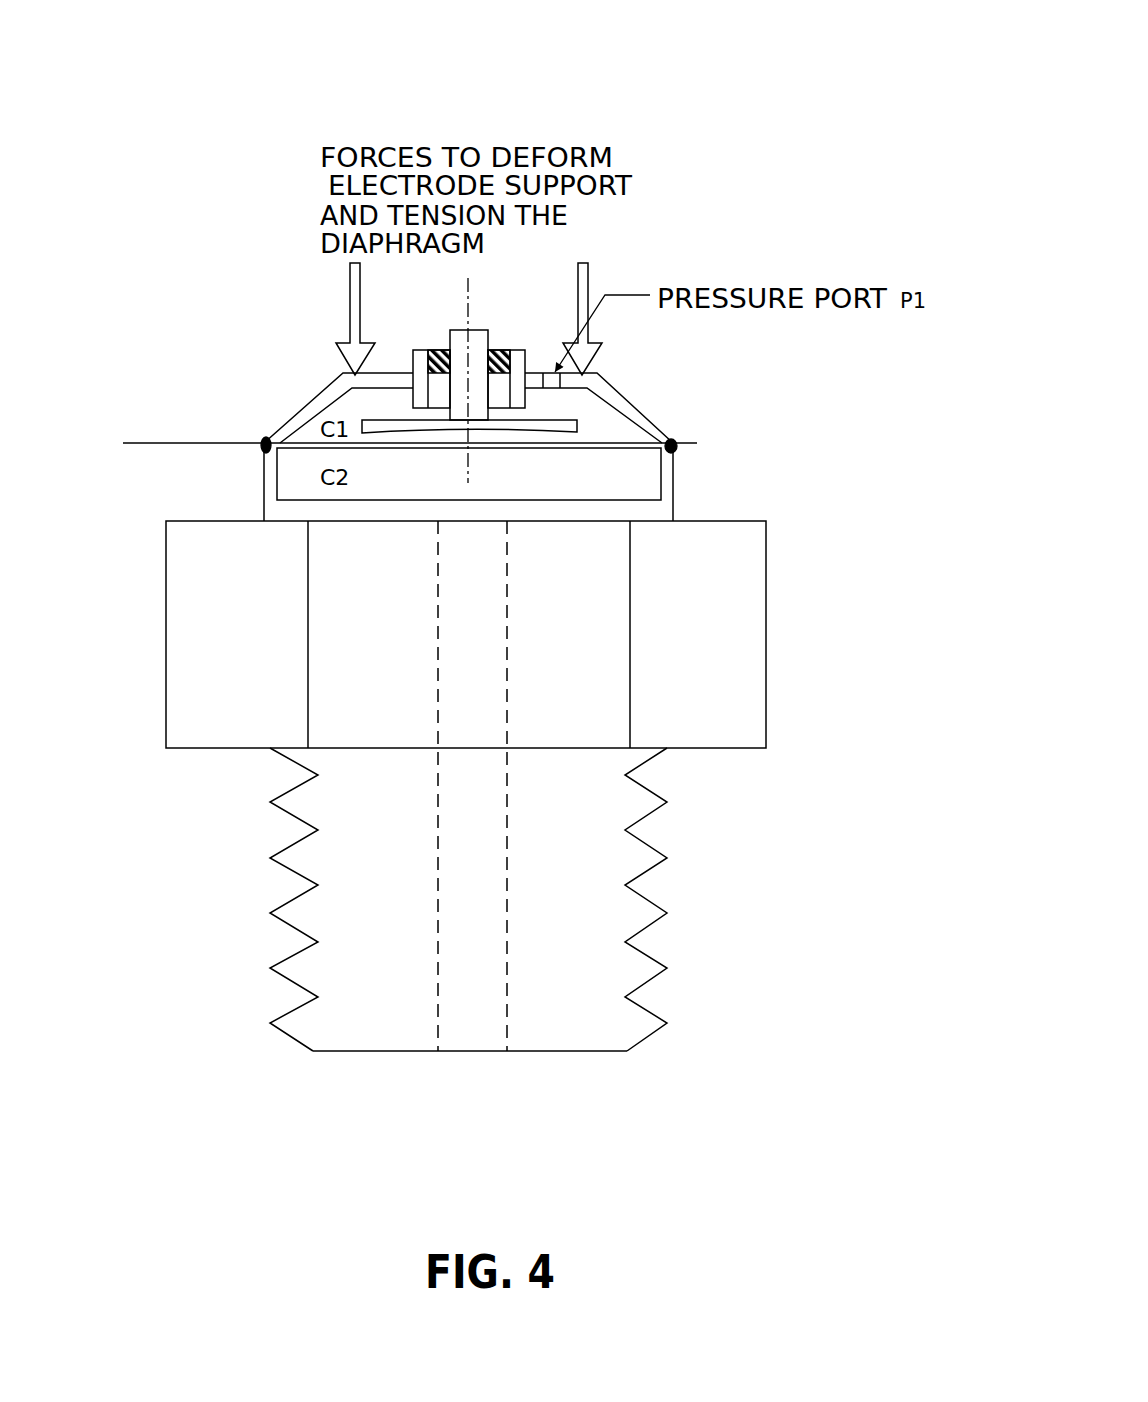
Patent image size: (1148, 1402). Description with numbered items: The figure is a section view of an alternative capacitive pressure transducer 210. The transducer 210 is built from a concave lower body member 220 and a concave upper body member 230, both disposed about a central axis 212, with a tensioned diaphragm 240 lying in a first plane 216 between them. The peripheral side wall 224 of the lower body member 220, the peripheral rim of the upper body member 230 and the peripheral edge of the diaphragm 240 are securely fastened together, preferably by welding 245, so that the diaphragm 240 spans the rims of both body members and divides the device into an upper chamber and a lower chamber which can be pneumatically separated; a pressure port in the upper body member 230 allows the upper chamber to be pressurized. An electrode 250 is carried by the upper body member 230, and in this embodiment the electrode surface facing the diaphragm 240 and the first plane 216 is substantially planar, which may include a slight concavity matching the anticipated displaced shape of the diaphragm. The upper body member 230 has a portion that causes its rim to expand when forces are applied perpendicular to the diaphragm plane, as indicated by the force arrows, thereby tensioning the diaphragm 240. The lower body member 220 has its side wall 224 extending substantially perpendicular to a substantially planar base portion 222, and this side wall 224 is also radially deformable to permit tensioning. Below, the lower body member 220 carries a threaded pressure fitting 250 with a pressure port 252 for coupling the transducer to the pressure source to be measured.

The capacitive pressure transducer 210 is at (748, 102).
The central axis 212 is at (473, 287).
The first plane 216 is at (133, 443).
The lower body member 220 is at (845, 703).
The base portion 222 is at (308, 508).
The side wall 224 is at (677, 500).
The upper body member 230 is at (300, 407).
The diaphragm 240 is at (612, 442).
The welding 245 is at (677, 444).
The electrode 250 is at (555, 432).
The pressure port 252 is at (472, 1053).